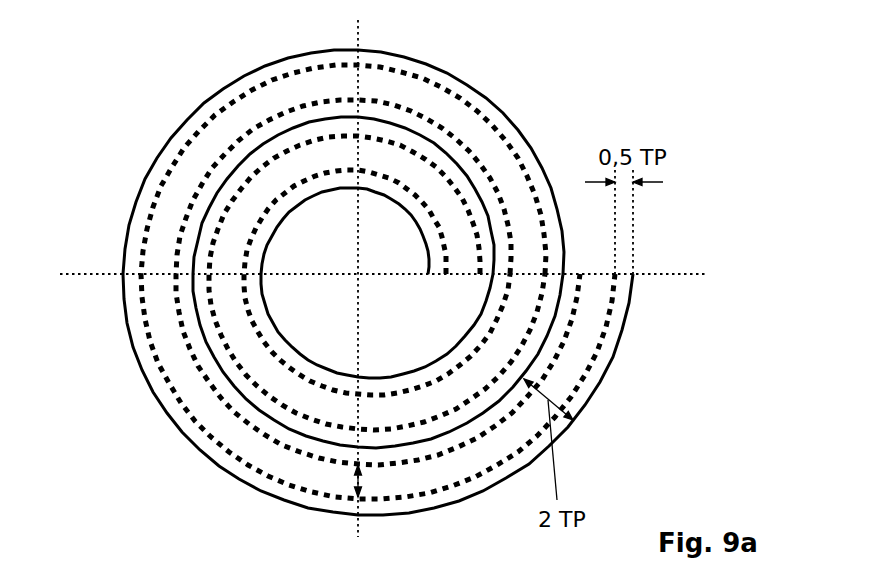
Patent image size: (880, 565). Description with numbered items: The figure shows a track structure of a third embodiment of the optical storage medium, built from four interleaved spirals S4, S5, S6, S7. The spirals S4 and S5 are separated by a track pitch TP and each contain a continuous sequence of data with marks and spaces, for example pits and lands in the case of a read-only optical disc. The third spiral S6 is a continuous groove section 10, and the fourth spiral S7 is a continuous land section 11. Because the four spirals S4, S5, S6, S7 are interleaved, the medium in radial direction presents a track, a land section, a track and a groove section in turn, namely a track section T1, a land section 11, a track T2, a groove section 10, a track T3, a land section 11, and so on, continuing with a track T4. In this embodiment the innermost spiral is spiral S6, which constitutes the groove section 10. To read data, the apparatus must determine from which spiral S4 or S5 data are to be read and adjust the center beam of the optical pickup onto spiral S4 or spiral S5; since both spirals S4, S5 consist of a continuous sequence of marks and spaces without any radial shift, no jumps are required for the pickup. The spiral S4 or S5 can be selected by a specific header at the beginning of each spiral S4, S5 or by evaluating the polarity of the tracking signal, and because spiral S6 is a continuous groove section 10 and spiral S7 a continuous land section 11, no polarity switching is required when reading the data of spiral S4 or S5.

The groove section 10 is at (348, 282).
The land section 11 is at (248, 447).
The track section T1 is at (427, 210).
The track T2 is at (235, 195).
The track T3 is at (213, 390).
The track T4 is at (213, 118).
The spiral S4 is at (378, 250).
The spiral S5 is at (378, 278).
The third spiral S6 is at (537, 148).
The fourth spiral S7 is at (382, 82).
The track pitch TP is at (363, 480).